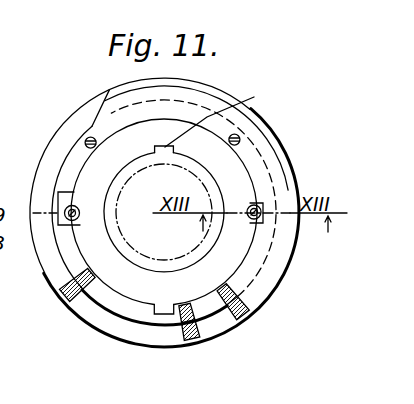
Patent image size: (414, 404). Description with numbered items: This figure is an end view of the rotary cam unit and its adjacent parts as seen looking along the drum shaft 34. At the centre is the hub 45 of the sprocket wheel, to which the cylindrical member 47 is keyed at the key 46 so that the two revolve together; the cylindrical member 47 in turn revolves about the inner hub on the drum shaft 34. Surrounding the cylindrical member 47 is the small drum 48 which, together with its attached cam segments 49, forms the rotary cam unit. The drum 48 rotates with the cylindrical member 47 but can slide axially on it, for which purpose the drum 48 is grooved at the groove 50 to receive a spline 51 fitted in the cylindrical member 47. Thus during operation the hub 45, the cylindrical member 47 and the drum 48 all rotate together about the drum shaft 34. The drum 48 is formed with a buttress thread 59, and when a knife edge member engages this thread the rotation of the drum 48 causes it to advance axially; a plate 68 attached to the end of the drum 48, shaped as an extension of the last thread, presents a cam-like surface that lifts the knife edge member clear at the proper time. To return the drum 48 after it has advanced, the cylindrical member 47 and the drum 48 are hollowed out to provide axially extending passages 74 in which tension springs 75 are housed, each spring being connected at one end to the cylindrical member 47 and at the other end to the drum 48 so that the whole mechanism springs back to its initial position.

The drum shaft 34 is at (95, 237).
The hub 45 is at (110, 187).
The key 46 is at (222, 114).
The cylindrical member 47 is at (97, 165).
The drum 48 is at (240, 275).
The cam segments 49 is at (275, 133).
The groove 50 is at (187, 332).
The spline 51 is at (160, 315).
The buttress thread 59 is at (255, 266).
The plate 68 is at (186, 79).
The passages 74 is at (268, 195).
The tension springs 75 is at (262, 224).